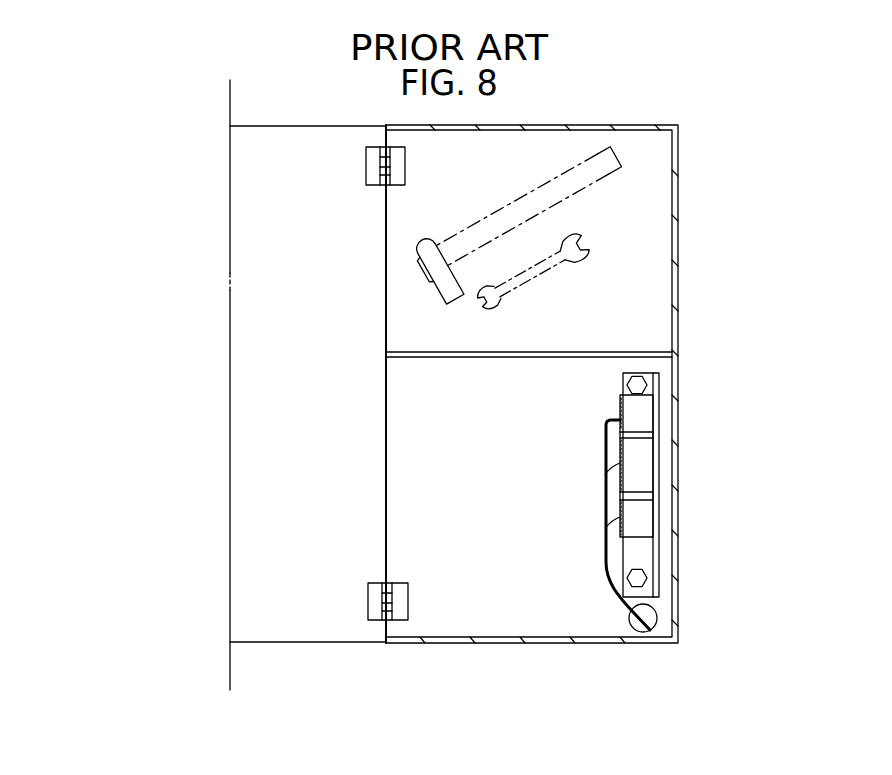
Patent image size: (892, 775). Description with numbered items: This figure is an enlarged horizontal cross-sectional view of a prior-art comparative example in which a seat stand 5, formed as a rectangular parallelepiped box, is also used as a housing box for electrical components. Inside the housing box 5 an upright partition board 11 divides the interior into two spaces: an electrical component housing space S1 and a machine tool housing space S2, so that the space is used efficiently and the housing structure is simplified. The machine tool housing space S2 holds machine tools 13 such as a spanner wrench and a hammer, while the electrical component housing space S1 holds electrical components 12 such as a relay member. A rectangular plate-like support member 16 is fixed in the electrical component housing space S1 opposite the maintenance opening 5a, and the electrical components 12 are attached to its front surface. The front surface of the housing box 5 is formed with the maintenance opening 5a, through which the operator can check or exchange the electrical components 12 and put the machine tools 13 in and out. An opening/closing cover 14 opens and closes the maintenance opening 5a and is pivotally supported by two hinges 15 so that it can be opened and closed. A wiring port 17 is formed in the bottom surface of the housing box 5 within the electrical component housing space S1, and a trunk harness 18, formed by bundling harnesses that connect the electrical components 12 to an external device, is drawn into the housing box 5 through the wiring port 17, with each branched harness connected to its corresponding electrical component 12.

The seat stand 5 is at (678, 303).
The maintenance opening 5a is at (387, 442).
The partition board 11 is at (450, 357).
The electrical components 12 is at (620, 412).
The machine tools 13 is at (588, 185).
The opening/closing cover 14 is at (243, 265).
The hinges 15 is at (366, 163).
The support member 16 is at (660, 463).
The wiring port 17 is at (653, 613).
The trunk harness 18 is at (617, 607).
The electrical component housing space S1 is at (548, 527).
The machine tool housing space S2 is at (548, 343).